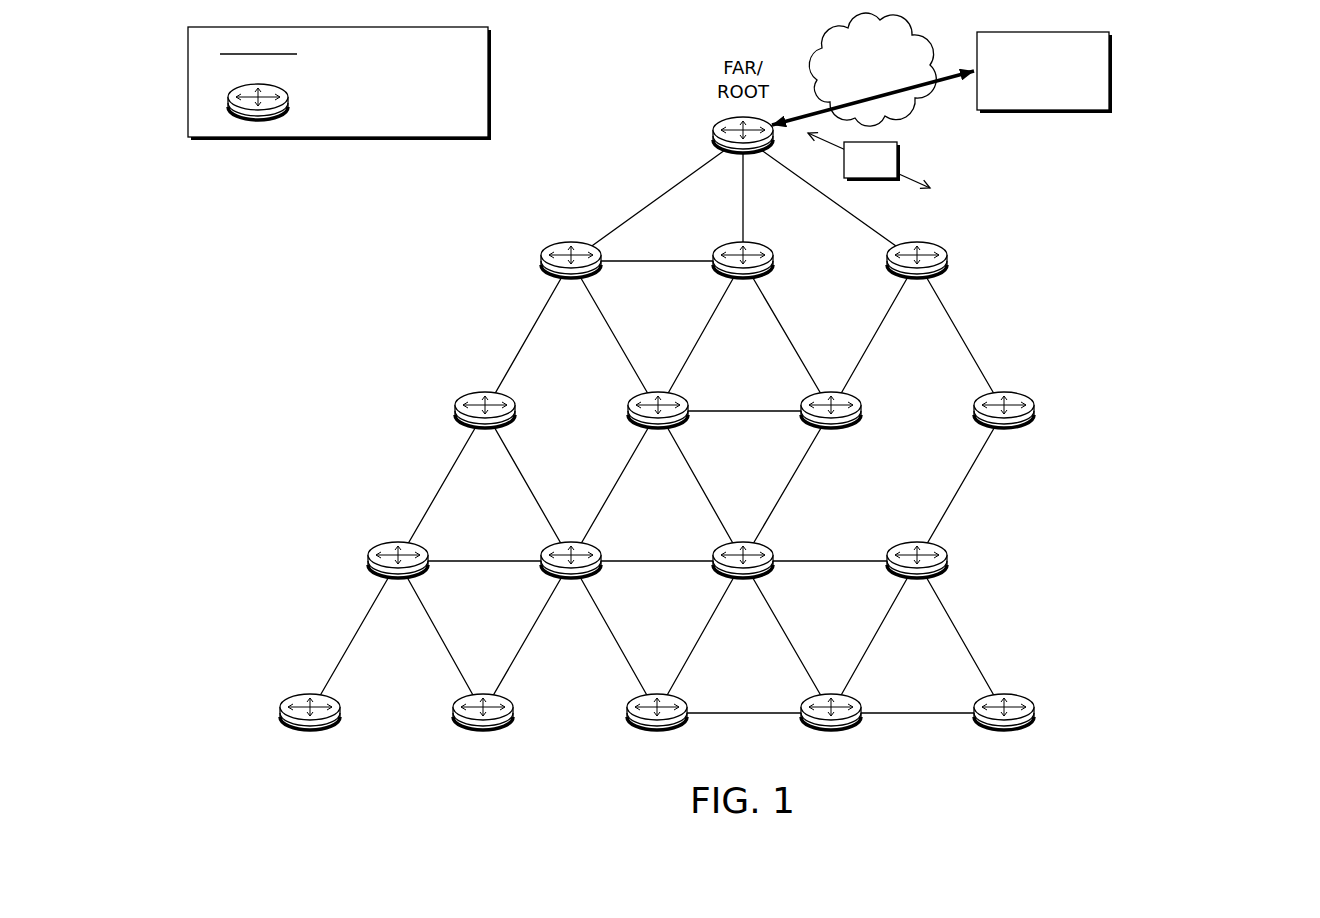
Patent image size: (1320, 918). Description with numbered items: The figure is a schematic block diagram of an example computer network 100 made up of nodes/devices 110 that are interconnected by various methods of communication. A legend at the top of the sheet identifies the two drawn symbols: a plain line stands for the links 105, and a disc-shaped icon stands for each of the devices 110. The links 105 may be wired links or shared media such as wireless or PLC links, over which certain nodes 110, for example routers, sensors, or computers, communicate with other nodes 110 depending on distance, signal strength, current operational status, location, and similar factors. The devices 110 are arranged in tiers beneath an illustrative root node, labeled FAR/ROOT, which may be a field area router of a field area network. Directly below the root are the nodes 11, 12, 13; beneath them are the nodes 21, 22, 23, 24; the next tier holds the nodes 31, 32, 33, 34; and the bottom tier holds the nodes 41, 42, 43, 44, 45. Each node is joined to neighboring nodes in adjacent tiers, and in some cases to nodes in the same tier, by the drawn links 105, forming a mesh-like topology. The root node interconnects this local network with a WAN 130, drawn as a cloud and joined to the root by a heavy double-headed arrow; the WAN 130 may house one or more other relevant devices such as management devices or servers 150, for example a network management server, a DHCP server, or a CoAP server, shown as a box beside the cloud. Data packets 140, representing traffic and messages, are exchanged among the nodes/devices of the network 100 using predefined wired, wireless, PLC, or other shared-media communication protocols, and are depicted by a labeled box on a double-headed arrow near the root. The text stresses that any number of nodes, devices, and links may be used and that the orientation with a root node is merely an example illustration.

The computer network 100 is at (1203, 82).
The links 105 is at (612, 379).
The nodes/devices 110 is at (324, 102).
The WAN 130 is at (856, 86).
The data packets 140 is at (856, 173).
The servers 150 is at (1028, 94).
The node 11 is at (571, 278).
The node 12 is at (743, 278).
The node 13 is at (917, 278).
The node 21 is at (485, 428).
The node 22 is at (658, 428).
The node 23 is at (831, 428).
The node 24 is at (1004, 428).
The node 31 is at (398, 578).
The node 32 is at (571, 578).
The node 33 is at (743, 578).
The node 34 is at (917, 578).
The node 41 is at (310, 730).
The node 42 is at (483, 730).
The node 43 is at (657, 730).
The node 44 is at (831, 730).
The node 45 is at (1004, 730).